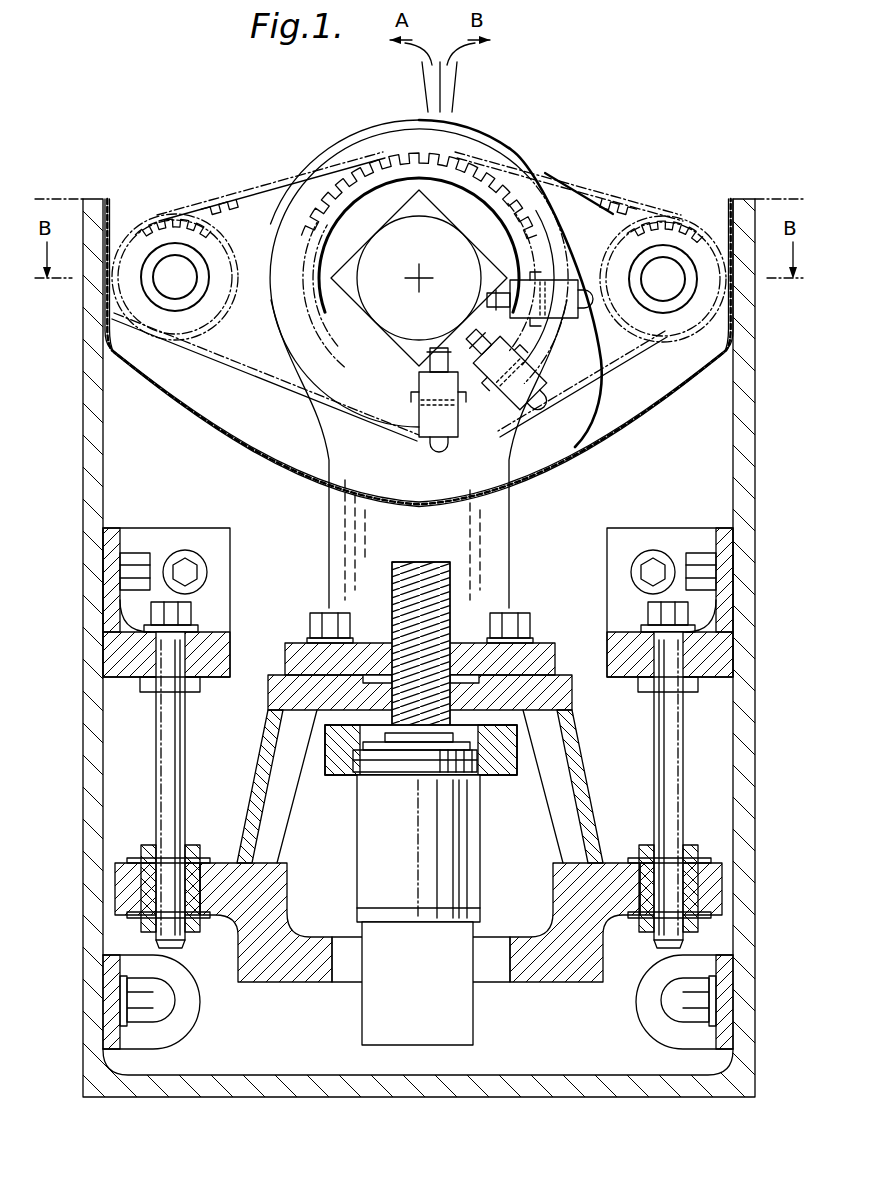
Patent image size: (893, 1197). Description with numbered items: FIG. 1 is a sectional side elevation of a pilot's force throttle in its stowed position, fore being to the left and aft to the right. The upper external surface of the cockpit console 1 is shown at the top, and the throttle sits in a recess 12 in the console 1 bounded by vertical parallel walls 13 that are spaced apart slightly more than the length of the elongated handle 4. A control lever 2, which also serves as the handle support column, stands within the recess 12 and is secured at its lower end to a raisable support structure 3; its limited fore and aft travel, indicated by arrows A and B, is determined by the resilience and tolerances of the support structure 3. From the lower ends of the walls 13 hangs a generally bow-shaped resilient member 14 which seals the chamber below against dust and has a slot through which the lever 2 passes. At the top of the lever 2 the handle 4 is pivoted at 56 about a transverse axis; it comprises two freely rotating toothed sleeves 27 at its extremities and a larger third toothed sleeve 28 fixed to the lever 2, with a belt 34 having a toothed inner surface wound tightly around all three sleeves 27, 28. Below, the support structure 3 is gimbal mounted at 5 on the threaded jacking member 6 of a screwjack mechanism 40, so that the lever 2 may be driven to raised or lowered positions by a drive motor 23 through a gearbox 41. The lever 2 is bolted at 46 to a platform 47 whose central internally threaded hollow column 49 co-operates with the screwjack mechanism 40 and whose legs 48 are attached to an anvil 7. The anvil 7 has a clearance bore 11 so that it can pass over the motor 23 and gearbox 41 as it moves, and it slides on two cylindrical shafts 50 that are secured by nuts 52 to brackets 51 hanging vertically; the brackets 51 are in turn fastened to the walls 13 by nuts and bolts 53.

The console 1 is at (76, 199).
The control lever 2 is at (500, 525).
The raisable support structure 3 is at (268, 748).
The elongated handle 4 is at (485, 140).
The gimbal mount 5 is at (403, 752).
The threaded spindle 6 is at (400, 585).
The anvil 7 is at (265, 968).
The clearance bore 11 is at (343, 968).
The recess 12 is at (735, 486).
The vertical parallel walls 13 is at (103, 410).
The bow shaped resilient member 14 is at (600, 458).
The raise/lower drive motor 23 is at (410, 1030).
The sleeves 27 is at (165, 222).
The third sleeve 28 is at (505, 182).
The belt 34 is at (370, 160).
The screwjack mechanism 40 is at (450, 752).
The gearbox 41 is at (458, 845).
The bolt 46 is at (320, 625).
The platform 47 is at (557, 690).
The internally threaded hollow column 49 is at (380, 650).
The legs 48 is at (262, 796).
The cylindrical shafts 50 is at (162, 776).
The brackets 51 is at (103, 646).
The nuts 52 is at (690, 612).
The nuts and bolts 53 is at (185, 565).
The pivot 56 is at (422, 277).